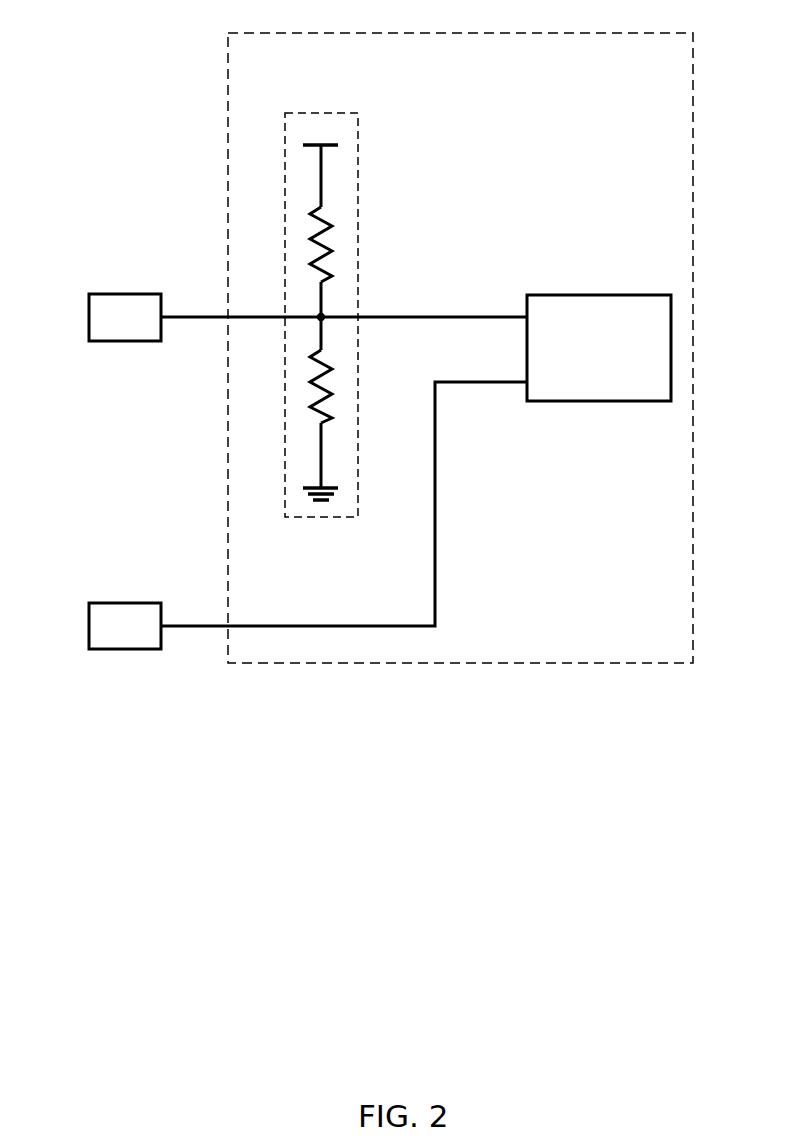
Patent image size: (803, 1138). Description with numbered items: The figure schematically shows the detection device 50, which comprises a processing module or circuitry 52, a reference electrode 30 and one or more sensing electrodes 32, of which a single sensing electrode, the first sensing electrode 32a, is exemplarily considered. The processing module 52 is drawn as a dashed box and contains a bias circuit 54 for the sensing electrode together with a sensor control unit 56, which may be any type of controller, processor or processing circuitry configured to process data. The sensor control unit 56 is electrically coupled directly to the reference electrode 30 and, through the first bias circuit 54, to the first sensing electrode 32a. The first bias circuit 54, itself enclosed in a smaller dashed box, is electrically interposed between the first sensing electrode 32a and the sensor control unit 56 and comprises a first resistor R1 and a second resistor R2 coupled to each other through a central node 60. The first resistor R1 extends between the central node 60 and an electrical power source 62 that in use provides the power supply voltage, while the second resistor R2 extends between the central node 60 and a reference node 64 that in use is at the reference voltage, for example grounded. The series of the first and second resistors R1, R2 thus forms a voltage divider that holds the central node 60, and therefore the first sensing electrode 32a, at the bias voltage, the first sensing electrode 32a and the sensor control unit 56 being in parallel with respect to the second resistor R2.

The detection device 50 is at (94, 66).
The processing module 52 is at (682, 92).
The bias circuit 54 is at (350, 163).
The sensor control unit 56 is at (576, 307).
The central node 60 is at (328, 315).
The electrical power source 62 is at (310, 143).
The reference node 64 is at (326, 498).
The first resistor R1 is at (330, 232).
The second resistor R2 is at (330, 395).
The sensing electrode 32 is at (75, 289).
The first sensing electrode 32a is at (137, 330).
The reference electrode 30 is at (132, 615).